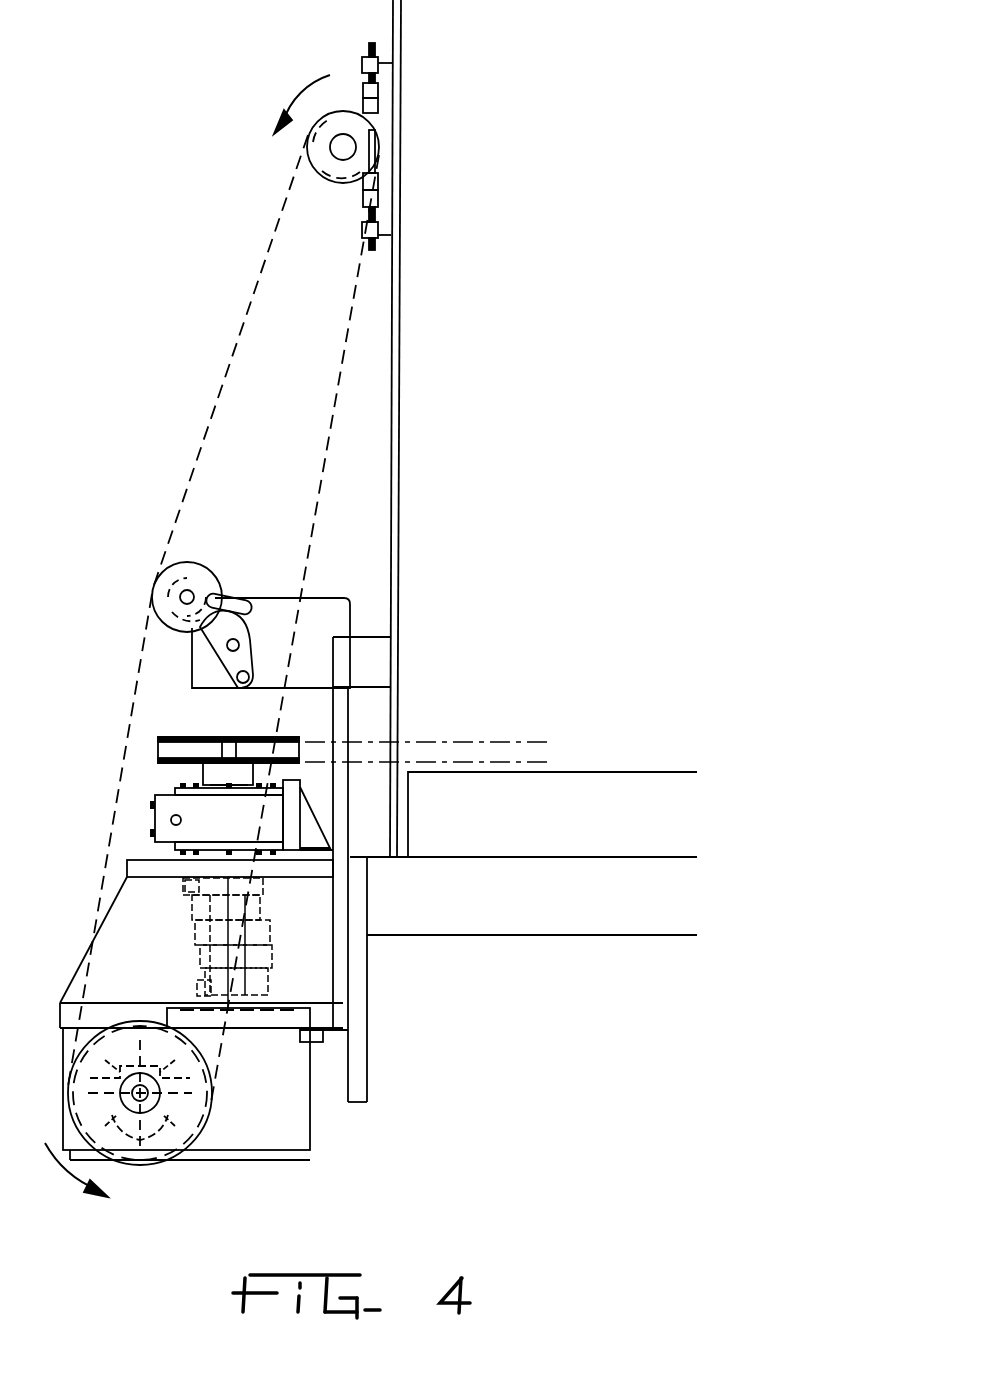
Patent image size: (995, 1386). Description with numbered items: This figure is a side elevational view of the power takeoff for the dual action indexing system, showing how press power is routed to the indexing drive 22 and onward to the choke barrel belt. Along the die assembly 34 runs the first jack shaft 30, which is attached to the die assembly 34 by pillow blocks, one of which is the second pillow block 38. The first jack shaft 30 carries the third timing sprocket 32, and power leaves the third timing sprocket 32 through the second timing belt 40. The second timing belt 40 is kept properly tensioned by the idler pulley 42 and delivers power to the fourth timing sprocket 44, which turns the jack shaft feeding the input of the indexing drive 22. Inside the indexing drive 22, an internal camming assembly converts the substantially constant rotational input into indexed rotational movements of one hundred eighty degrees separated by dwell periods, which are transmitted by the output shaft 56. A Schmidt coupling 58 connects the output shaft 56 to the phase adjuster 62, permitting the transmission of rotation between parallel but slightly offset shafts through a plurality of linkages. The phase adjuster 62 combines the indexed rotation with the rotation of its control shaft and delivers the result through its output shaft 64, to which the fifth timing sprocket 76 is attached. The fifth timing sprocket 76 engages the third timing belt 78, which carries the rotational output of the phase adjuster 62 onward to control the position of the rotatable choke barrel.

The mechanical indexing drive 22 is at (293, 1132).
The first jack shaft 30 is at (346, 147).
The third timing sprocket 32 is at (368, 130).
The die assembly 34 is at (398, 425).
The second pillow block 38 is at (386, 62).
The second timing belt 40 is at (236, 345).
The idler pulley 42 is at (152, 598).
The fourth timing sprocket 44 is at (175, 1163).
The output shaft 56 is at (257, 1008).
The Schmidt coupling 58 is at (197, 950).
The phase adjuster 62 is at (168, 831).
The output shaft 64 is at (210, 757).
The fifth timing sprocket 76 is at (162, 738).
The third timing belt 78 is at (512, 746).